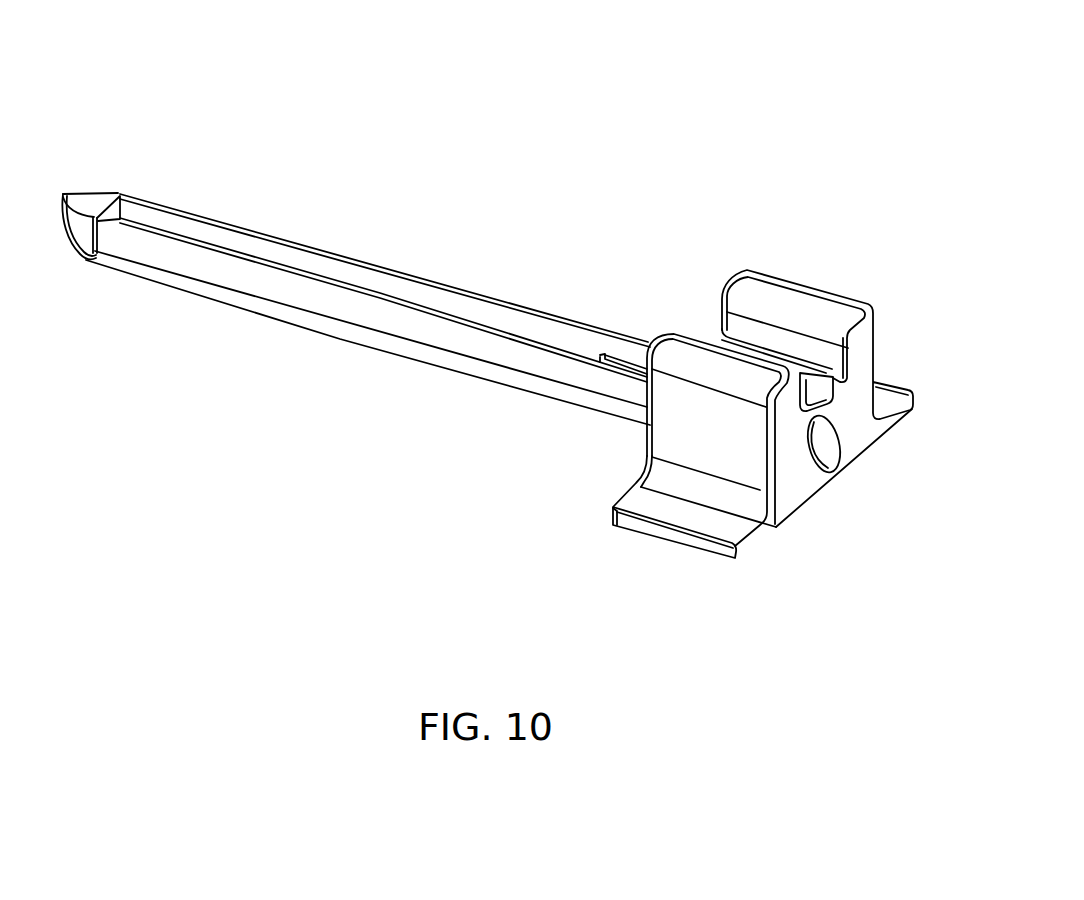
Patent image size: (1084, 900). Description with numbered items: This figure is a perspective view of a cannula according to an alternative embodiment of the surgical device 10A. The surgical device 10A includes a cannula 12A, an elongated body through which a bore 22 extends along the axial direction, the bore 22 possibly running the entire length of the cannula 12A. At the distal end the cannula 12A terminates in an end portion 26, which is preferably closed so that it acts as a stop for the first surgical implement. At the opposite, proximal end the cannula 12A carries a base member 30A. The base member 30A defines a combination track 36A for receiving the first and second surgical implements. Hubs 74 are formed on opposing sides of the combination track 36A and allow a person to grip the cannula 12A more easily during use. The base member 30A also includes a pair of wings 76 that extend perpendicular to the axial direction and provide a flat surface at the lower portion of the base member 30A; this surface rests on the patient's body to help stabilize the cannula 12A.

The surgical device 10A is at (702, 106).
The cannula 12A is at (388, 353).
The bore 22 is at (257, 253).
The end portion 26 is at (89, 205).
The hubs 74 is at (687, 370).
The wings 76 is at (891, 382).
The base member 30A is at (775, 500).
The combination track 36A is at (840, 442).